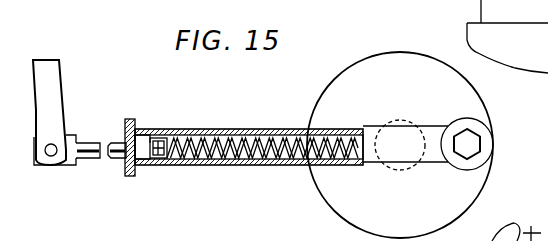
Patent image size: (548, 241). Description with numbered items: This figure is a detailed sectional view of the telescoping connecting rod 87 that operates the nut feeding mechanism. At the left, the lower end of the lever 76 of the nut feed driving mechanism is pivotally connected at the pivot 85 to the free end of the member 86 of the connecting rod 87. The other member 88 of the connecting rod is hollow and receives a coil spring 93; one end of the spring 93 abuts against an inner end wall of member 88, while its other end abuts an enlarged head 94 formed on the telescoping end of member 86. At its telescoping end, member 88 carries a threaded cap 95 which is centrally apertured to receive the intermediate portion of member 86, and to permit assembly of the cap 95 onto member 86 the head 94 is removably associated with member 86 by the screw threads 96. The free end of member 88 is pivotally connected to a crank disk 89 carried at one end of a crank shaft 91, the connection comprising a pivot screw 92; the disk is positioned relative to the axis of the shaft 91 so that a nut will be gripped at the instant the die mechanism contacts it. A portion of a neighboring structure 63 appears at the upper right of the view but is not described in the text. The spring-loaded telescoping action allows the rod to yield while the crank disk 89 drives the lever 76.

The lever 76 is at (64, 77).
The pivotal connection 85 is at (51, 157).
The member 86 is at (85, 141).
The threaded cap 95 is at (132, 118).
The enlarged head 94 is at (140, 172).
The telescoping connecting rod 87 is at (162, 128).
The member 88 is at (199, 128).
The screw threads 96 is at (168, 140).
The coil spring 93 is at (281, 134).
The crank disk 89 is at (374, 60).
The crank shaft 91 is at (398, 124).
The pivot screw 92 is at (474, 131).
The frame member 63 is at (547, 25).